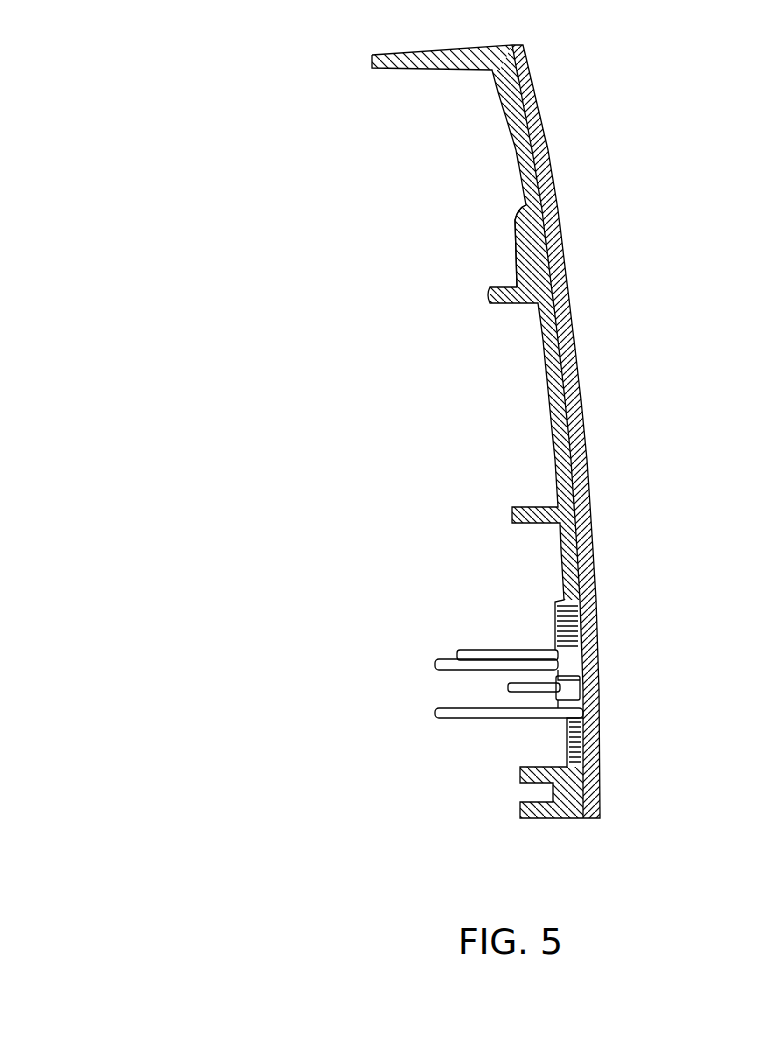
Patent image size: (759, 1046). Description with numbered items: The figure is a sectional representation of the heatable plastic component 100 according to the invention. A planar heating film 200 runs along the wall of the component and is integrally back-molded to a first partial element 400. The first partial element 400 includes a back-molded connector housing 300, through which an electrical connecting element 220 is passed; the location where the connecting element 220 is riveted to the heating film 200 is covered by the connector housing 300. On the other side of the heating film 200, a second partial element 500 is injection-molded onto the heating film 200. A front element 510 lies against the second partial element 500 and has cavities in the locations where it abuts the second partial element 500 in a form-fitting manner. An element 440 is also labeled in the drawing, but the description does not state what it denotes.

The heatable plastic component 100 is at (196, 214).
The planar heating film 200 is at (563, 352).
The electrical connecting element 220 is at (520, 688).
The connector housing 300 is at (440, 631).
The first partial element 400 is at (522, 240).
The flange 440 is at (440, 69).
The second partial element 500 is at (573, 480).
The front element 510 is at (540, 128).